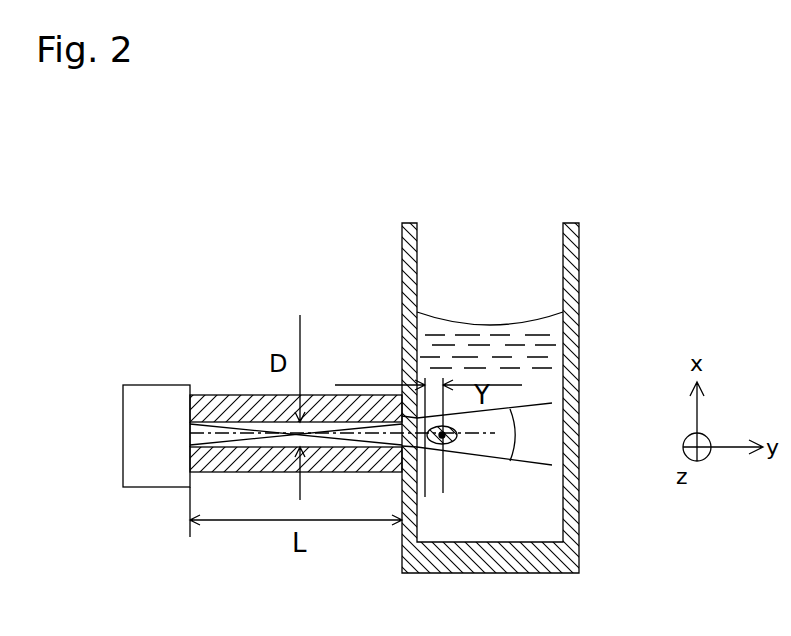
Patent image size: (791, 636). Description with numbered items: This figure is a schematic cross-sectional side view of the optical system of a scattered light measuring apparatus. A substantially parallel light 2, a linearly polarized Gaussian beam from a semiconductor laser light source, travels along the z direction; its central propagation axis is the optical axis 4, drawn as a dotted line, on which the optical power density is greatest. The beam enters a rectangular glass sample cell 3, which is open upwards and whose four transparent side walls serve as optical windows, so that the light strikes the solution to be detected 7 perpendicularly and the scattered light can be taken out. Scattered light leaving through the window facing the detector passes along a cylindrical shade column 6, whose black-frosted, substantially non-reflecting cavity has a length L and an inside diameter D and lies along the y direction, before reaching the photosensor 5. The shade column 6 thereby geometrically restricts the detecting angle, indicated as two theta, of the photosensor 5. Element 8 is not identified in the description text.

The substantially parallel light 2 is at (457, 438).
The sample cell 3 is at (575, 278).
The optical axis 4 is at (445, 446).
The photosensor 5 is at (135, 478).
The shade column 6 is at (205, 395).
The solution to be detected 7 is at (447, 322).
The fiber core / light beam 8 is at (255, 430).